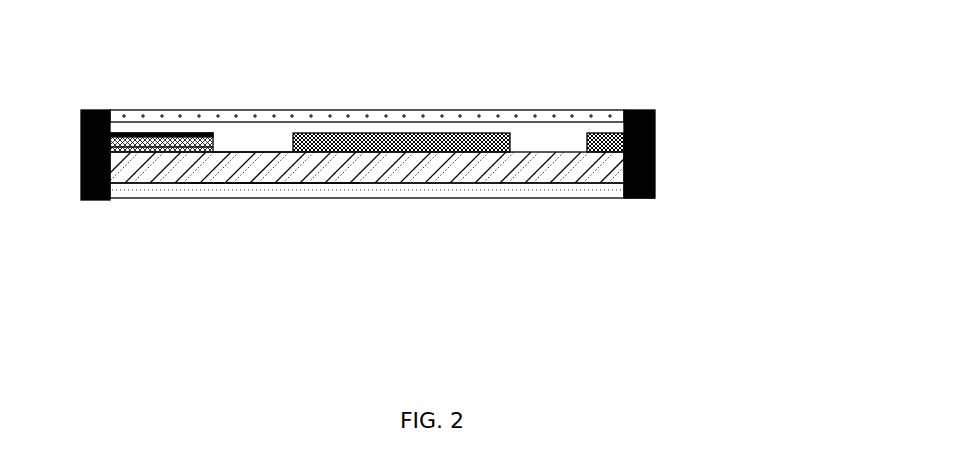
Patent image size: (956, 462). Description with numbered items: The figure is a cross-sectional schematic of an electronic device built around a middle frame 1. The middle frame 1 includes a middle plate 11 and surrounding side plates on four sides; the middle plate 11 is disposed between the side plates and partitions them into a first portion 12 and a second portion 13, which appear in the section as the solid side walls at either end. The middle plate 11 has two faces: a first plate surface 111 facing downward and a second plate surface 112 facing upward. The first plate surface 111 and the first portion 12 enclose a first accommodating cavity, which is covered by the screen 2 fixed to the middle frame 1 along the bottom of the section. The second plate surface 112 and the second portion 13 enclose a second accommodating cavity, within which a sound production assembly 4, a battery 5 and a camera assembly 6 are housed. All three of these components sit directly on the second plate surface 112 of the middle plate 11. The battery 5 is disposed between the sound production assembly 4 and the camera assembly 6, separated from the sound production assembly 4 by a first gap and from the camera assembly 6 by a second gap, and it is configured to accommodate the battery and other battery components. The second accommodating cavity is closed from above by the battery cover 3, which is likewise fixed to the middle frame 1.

The middle frame 1 is at (740, 95).
The screen 2 is at (155, 185).
The battery cover 3 is at (412, 112).
The sound production assembly 4 is at (150, 137).
The battery 5 is at (342, 137).
The camera assembly 6 is at (610, 133).
The middle plate 11 is at (562, 168).
The first portion 12 is at (657, 190).
The second portion 13 is at (660, 118).
The first plate surface 111 is at (268, 184).
The second plate surface 112 is at (238, 148).